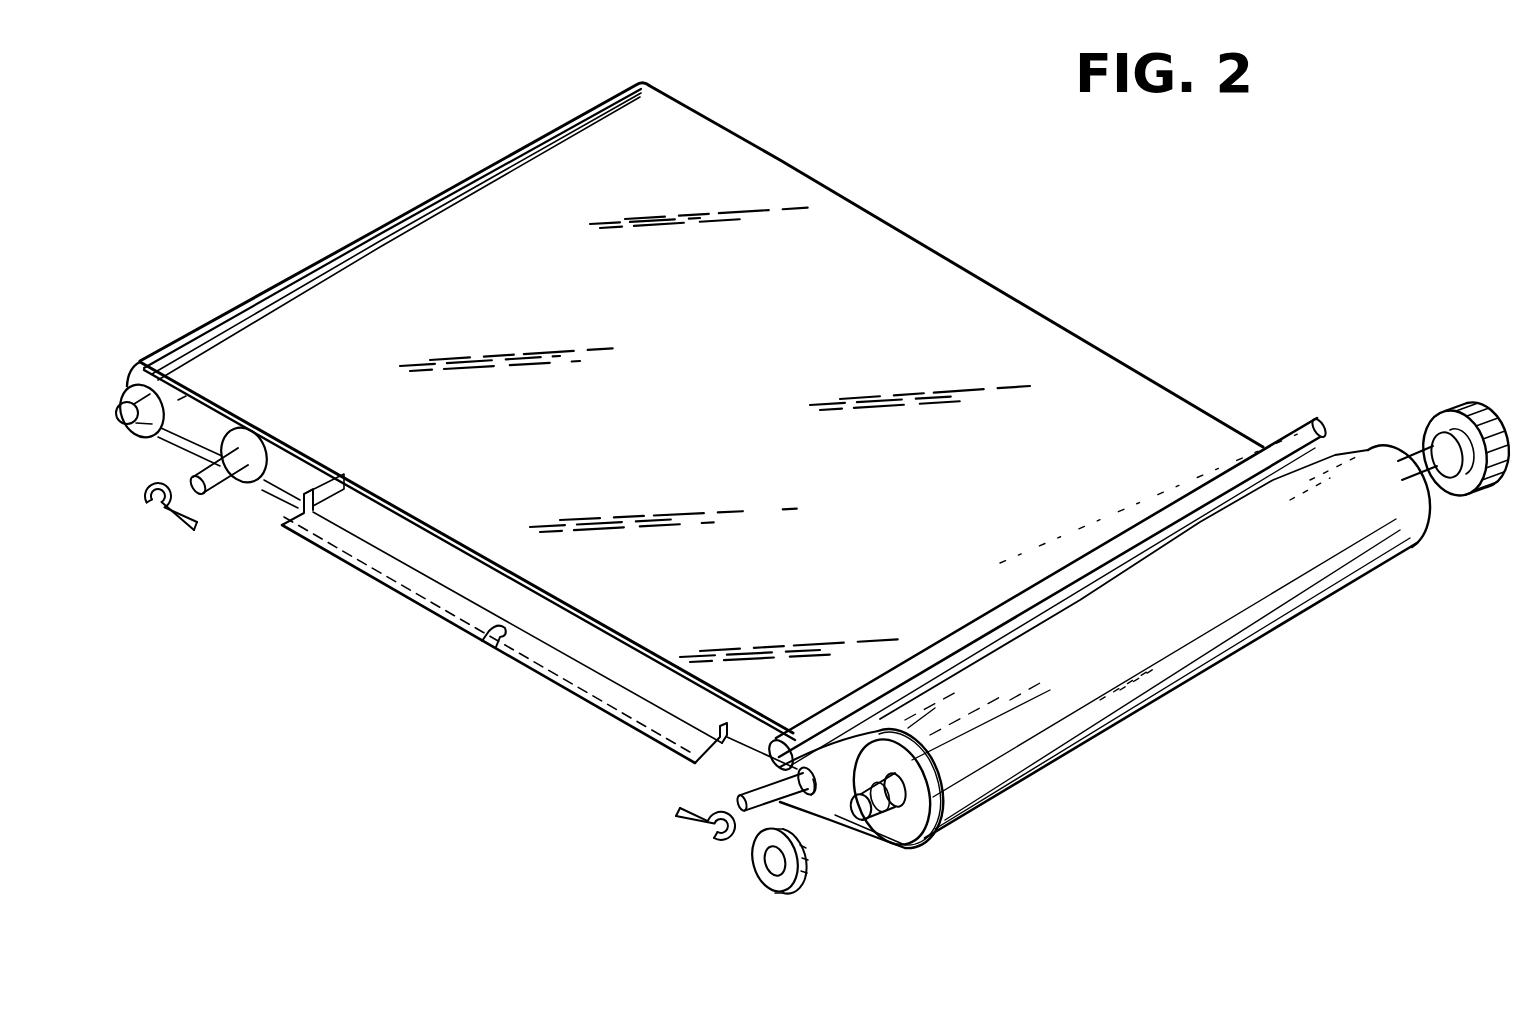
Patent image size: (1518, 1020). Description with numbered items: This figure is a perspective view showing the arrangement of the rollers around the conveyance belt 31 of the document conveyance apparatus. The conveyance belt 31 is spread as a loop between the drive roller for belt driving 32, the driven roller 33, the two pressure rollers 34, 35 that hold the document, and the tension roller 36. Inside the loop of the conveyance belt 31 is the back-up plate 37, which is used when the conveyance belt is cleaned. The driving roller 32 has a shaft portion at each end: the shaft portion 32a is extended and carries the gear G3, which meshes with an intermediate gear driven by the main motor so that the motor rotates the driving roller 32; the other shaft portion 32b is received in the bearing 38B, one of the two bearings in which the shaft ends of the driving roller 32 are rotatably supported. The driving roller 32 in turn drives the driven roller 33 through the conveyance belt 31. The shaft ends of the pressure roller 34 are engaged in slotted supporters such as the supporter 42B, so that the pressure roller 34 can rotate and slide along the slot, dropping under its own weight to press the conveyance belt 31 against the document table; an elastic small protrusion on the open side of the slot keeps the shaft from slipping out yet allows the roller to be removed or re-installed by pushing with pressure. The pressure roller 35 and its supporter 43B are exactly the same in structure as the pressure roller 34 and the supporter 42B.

The conveyance belt 31 is at (927, 248).
The driven roller 33 is at (128, 392).
The pressure roller 35 is at (216, 495).
The supporter 43B is at (190, 532).
The back-up plate 37 is at (533, 668).
The tension roller 36 is at (735, 762).
The pressure roller 34 is at (820, 790).
The supporter 42B is at (680, 830).
The bearing 38B is at (753, 867).
The drive roller for belt driving 32 is at (907, 832).
The shaft portion 32b is at (872, 823).
The shaft portion 32a is at (1427, 492).
The gear G3 is at (1447, 410).